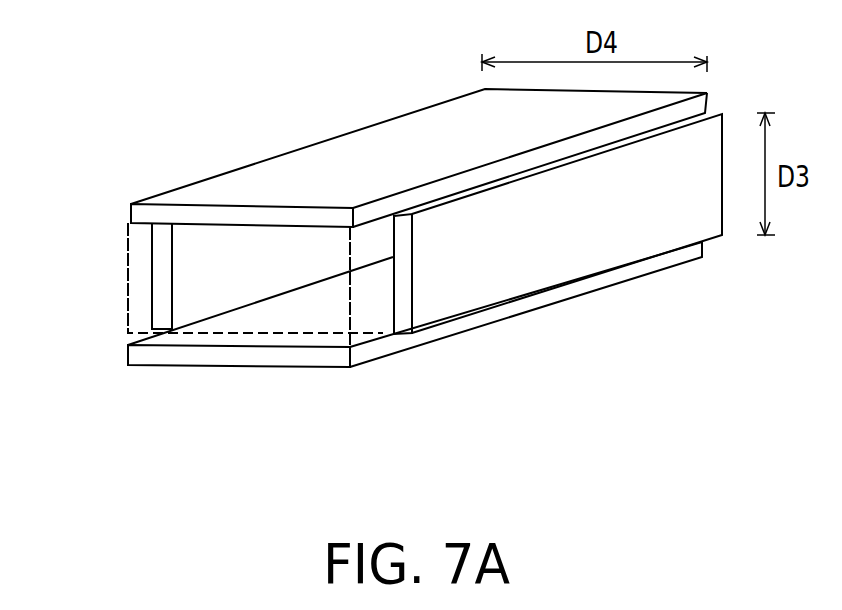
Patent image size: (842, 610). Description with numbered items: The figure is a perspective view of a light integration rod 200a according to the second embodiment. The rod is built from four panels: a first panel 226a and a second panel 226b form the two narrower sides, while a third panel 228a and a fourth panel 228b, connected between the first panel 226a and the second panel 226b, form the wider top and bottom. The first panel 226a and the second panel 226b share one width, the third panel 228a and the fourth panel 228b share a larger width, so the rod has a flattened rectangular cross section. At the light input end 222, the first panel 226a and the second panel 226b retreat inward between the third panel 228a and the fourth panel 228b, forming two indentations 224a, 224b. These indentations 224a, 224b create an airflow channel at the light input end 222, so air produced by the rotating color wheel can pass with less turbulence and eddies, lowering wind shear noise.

The heat dissipation module / housing assembly 200a is at (735, 456).
The third panel 228a is at (383, 158).
The fourth panel 228b is at (470, 322).
The first panel 226a is at (163, 272).
The second panel 226b is at (545, 265).
The light input end 222 is at (292, 300).
The indentation 224a is at (128, 300).
The indentation 224b is at (363, 291).